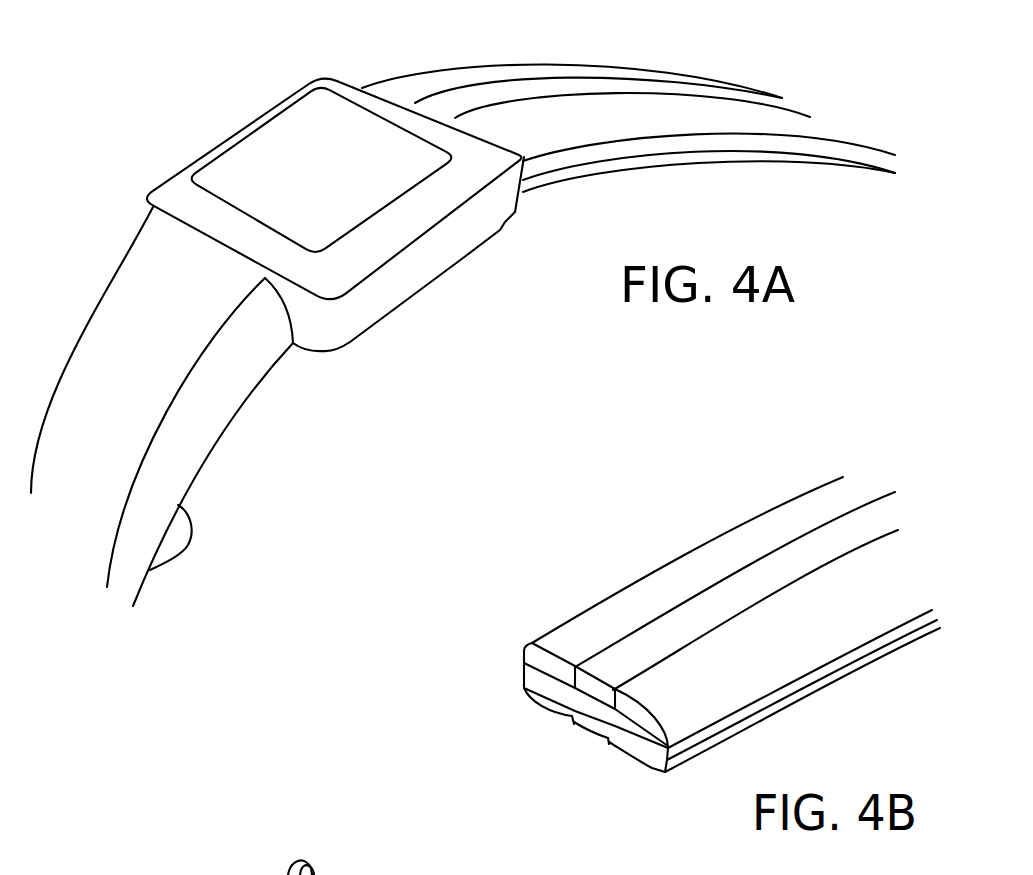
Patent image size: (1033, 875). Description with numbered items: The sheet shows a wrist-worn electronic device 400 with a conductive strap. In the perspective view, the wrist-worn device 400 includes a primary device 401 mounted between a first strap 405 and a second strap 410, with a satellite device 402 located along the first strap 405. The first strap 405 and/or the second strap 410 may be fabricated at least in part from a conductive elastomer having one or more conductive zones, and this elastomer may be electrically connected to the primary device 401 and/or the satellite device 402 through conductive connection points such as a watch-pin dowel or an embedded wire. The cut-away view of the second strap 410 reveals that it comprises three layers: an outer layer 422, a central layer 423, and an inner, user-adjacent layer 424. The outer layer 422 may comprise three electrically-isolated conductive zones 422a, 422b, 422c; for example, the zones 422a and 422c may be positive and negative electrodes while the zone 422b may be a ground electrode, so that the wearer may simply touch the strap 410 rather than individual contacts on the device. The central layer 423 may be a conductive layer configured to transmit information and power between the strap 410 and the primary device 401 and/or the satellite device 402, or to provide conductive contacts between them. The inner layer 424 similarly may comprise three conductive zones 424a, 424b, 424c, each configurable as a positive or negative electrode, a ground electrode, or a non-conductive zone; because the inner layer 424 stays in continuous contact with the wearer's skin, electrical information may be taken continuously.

In FIG. 4A, the wrist-worn device 400 is at (180, 50).
In FIG. 4A, the primary device 401 is at (205, 140).
In FIG. 4A, the satellite device 402 is at (191, 529).
In FIG. 4A, the first strap 405 is at (181, 293).
In FIG. 4A, the second strap 410 is at (563, 33).
In FIG. 4B, the second strap 410 is at (657, 507).
In FIG. 4B, the outer layer 422 is at (627, 546).
In FIG. 4B, the first conductive zone of outer layer 422a is at (580, 630).
In FIG. 4B, the second conductive zone of outer layer 422b is at (757, 583).
In FIG. 4B, the third conductive zone of outer layer 422c is at (737, 691).
In FIG. 4B, the central layer 423 is at (533, 678).
In FIG. 4B, the inner layer 424 is at (557, 792).
In FIG. 4B, the first conductive zone of inner layer 424a is at (533, 698).
In FIG. 4B, the second conductive zone of inner layer 424b is at (588, 723).
In FIG. 4B, the third conductive zone of inner layer 424c is at (652, 763).